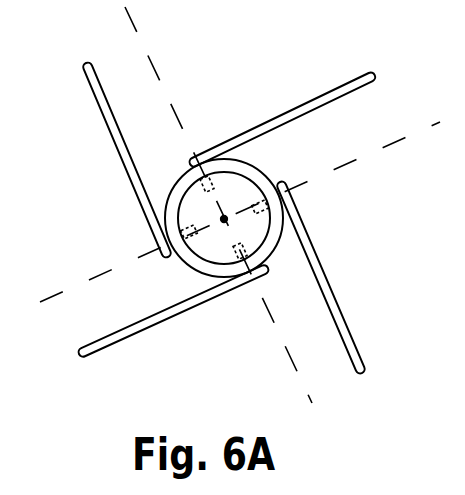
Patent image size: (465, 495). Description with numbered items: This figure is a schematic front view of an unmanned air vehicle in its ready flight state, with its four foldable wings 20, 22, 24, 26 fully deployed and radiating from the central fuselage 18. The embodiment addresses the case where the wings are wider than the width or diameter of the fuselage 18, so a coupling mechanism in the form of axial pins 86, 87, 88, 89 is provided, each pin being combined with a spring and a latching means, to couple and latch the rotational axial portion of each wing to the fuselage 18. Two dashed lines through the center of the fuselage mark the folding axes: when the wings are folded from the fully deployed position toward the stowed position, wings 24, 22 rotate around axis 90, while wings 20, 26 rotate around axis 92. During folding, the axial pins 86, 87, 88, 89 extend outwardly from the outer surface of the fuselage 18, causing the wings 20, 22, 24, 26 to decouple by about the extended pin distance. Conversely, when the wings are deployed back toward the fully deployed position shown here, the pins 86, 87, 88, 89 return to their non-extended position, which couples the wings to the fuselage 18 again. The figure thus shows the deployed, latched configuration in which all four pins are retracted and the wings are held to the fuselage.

The fuselage 18 is at (87, 326).
The foldable wing 20 is at (118, 150).
The foldable wing 22 is at (270, 117).
The foldable wing 24 is at (177, 316).
The foldable wing 26 is at (337, 302).
The axial pin 86 is at (188, 172).
The axial pin 87 is at (270, 195).
The axial pin 88 is at (266, 264).
The axial pin 89 is at (181, 261).
The axis 90 is at (285, 346).
The axis 92 is at (392, 141).